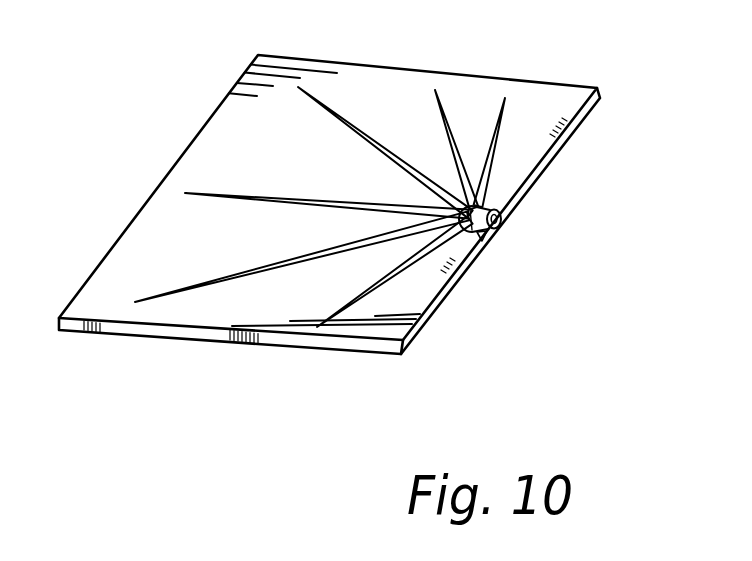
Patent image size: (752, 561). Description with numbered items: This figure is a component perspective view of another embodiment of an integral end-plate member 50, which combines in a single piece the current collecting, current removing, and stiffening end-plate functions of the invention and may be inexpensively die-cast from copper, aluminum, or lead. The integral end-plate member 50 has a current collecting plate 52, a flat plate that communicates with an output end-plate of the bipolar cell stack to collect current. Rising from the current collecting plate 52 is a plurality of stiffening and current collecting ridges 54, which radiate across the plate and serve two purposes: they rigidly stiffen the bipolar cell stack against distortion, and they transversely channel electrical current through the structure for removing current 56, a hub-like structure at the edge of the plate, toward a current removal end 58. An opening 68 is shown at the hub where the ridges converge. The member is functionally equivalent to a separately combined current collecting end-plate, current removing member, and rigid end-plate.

The integral end-plate member 50 is at (181, 372).
The current collecting plate 52 is at (555, 96).
The stiffening and current collecting ridges 54 is at (482, 173).
The structure for removing current 56 is at (480, 241).
The current removal end 58 is at (488, 236).
The pivot hole 68 is at (501, 219).